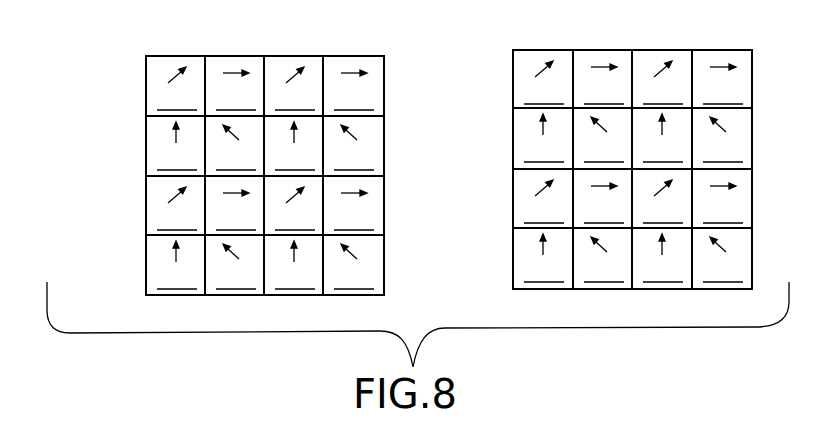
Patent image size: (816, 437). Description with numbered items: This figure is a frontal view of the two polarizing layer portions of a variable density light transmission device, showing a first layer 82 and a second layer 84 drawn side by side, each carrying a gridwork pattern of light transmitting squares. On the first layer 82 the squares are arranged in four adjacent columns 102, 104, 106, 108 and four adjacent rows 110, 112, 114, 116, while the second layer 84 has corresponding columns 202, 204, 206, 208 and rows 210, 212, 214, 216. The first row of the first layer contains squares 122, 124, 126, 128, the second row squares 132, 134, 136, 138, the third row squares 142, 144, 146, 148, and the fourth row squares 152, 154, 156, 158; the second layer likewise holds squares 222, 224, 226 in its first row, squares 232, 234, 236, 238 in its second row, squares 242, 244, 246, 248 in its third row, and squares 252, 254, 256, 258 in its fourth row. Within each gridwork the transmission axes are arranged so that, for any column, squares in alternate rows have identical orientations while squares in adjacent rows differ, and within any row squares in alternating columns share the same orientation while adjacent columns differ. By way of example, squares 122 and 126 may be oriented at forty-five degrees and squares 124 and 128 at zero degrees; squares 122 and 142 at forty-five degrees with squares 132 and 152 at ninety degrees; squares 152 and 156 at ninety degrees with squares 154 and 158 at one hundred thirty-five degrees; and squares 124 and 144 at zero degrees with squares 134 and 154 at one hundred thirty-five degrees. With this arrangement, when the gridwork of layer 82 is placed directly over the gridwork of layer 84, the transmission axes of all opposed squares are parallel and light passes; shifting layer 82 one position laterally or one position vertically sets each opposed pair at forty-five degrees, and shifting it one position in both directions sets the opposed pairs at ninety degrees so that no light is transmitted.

The first layer 82 is at (118, 58).
The second layer 84 is at (490, 50).
The column 102 is at (164, 153).
The column 104 is at (226, 153).
The column 106 is at (287, 153).
The column 108 is at (348, 153).
The row 110 is at (221, 89).
The row 112 is at (221, 152).
The row 114 is at (221, 214).
The row 116 is at (221, 276).
The square 122 is at (177, 88).
The square 124 is at (236, 90).
The square 126 is at (295, 88).
The square 128 is at (354, 90).
The square 132 is at (177, 146).
The square 134 is at (236, 147).
The square 136 is at (295, 146).
The square 138 is at (354, 147).
The square 142 is at (177, 208).
The square 144 is at (236, 210).
The square 146 is at (295, 208).
The square 148 is at (354, 210).
The square 152 is at (177, 265).
The square 154 is at (236, 266).
The square 156 is at (295, 265).
The square 158 is at (354, 266).
The column 202 is at (533, 147).
The column 204 is at (594, 147).
The column 206 is at (654, 147).
The column 208 is at (714, 147).
The row 210 is at (589, 83).
The row 212 is at (589, 145).
The row 214 is at (589, 207).
The row 216 is at (589, 269).
The square 222 is at (544, 82).
The square 224 is at (633, 82).
The square 226 is at (723, 84).
The square 232 is at (544, 138).
The square 234 is at (604, 139).
The square 236 is at (663, 138).
The square 238 is at (723, 139).
The square 242 is at (544, 201).
The square 244 is at (604, 203).
The square 246 is at (663, 201).
The square 248 is at (723, 203).
The square 252 is at (544, 258).
The square 254 is at (604, 259).
The square 256 is at (663, 258).
The square 258 is at (723, 259).